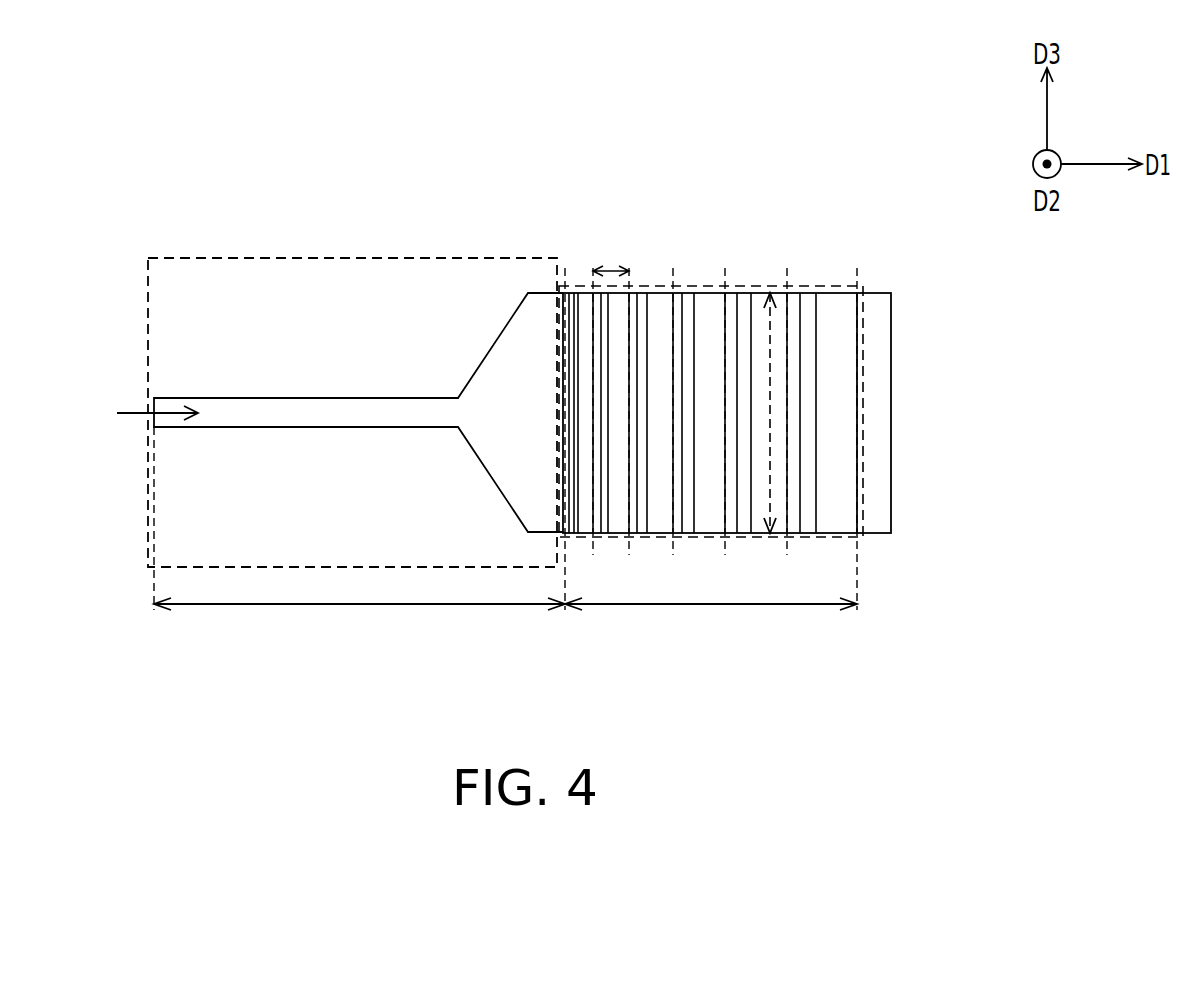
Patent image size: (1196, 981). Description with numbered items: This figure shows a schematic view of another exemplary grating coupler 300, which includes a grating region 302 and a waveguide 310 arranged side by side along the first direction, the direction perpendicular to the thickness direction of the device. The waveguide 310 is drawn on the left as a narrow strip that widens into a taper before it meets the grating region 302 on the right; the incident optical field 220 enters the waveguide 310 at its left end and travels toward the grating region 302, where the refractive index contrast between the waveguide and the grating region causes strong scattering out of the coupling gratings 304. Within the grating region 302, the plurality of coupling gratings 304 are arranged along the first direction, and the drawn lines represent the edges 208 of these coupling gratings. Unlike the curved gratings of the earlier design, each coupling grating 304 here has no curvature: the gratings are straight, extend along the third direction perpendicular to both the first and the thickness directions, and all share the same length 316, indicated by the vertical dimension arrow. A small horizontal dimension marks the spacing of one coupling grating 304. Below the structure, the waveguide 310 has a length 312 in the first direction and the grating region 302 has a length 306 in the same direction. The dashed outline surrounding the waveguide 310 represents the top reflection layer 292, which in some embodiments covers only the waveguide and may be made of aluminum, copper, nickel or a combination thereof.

The grating coupler 300 is at (112, 183).
The top reflection layer 292 is at (307, 257).
The waveguide 310 is at (294, 407).
The incident optical field 220 is at (135, 410).
The grating region 302 is at (862, 424).
The edges 208 is at (859, 338).
The coupling gratings 304 is at (611, 268).
The length 316 is at (763, 313).
The length 312 is at (358, 607).
The length 306 is at (710, 607).